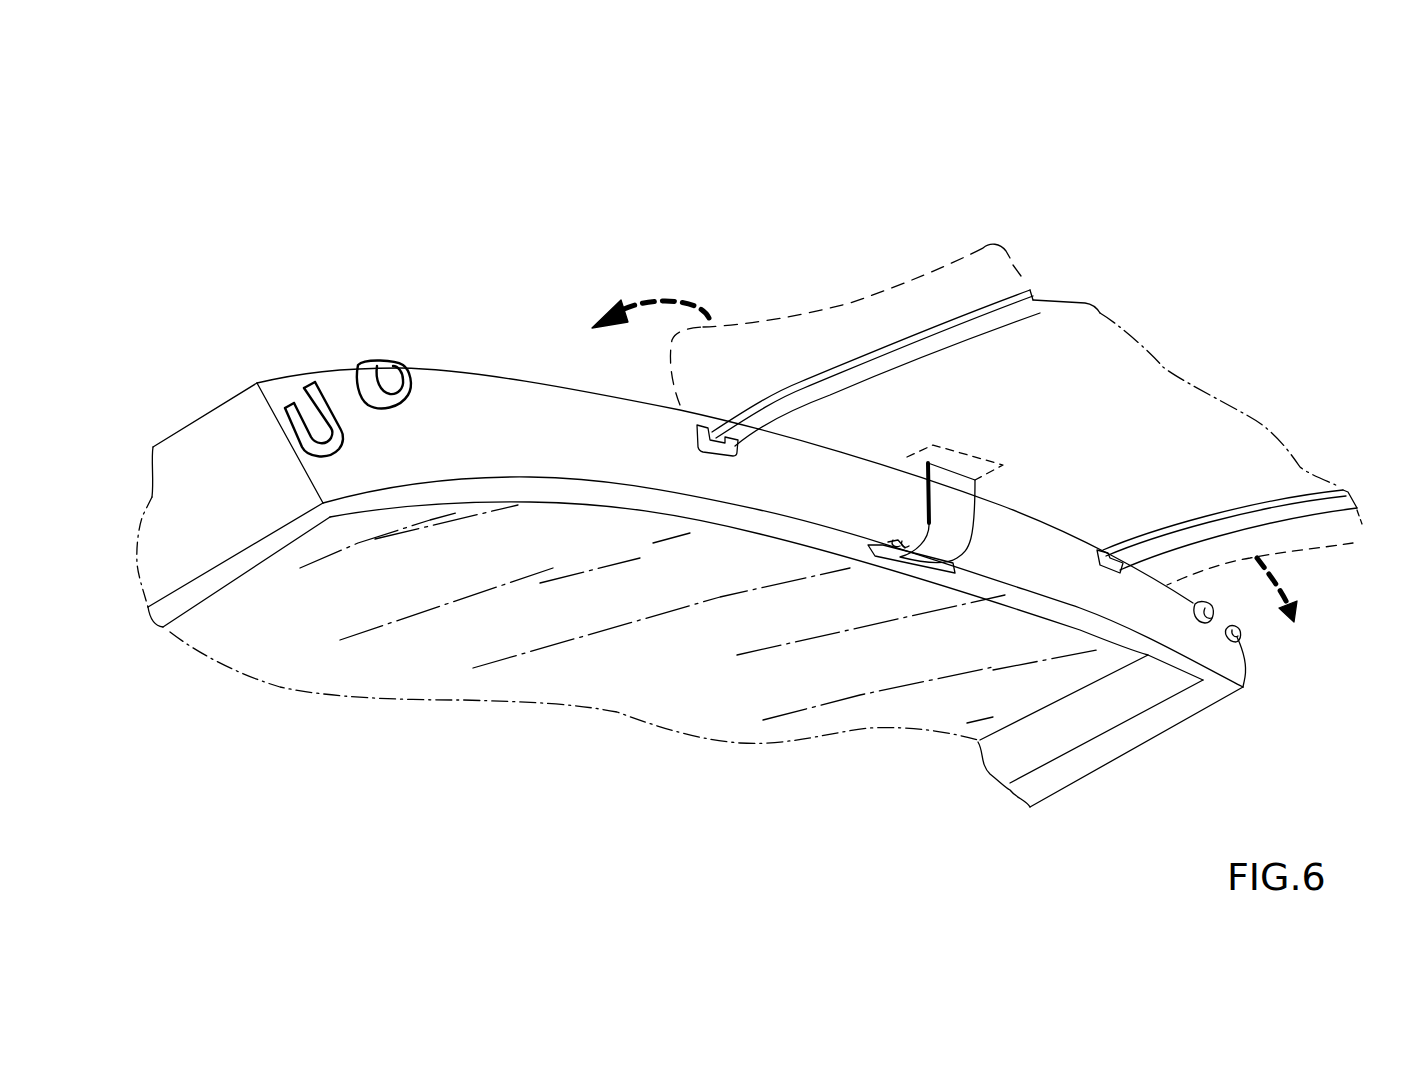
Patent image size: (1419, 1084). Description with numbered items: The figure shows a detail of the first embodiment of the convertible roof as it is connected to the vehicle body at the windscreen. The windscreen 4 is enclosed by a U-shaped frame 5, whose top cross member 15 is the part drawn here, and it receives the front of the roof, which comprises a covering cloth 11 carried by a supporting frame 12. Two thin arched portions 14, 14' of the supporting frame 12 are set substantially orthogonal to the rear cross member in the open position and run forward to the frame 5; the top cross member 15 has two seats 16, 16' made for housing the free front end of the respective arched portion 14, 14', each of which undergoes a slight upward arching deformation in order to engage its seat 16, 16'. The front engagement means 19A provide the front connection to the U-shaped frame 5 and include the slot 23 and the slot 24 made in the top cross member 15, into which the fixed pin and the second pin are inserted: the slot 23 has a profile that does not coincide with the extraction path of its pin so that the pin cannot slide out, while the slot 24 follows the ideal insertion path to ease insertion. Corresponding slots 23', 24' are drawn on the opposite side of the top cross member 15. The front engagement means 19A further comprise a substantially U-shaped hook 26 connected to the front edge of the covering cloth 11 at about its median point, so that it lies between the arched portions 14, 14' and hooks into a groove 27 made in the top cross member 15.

The windscreen 4 is at (333, 705).
The U-shaped frame 5 is at (277, 359).
The covering cloth 11 is at (1133, 380).
The supporting frame 12 is at (1324, 466).
The arched portion 14 is at (889, 320).
The arched portion 14' is at (1258, 502).
The top cross member 15 is at (488, 408).
The seat 16 is at (649, 395).
The seat 16' is at (1185, 454).
The front engagement means 19A is at (910, 592).
The slot 23 is at (377, 335).
The slot 24 is at (263, 383).
The rear hook 23' is at (1275, 637).
The rear hook 24' is at (1297, 675).
The hook 26 is at (957, 517).
The groove 27 is at (873, 551).